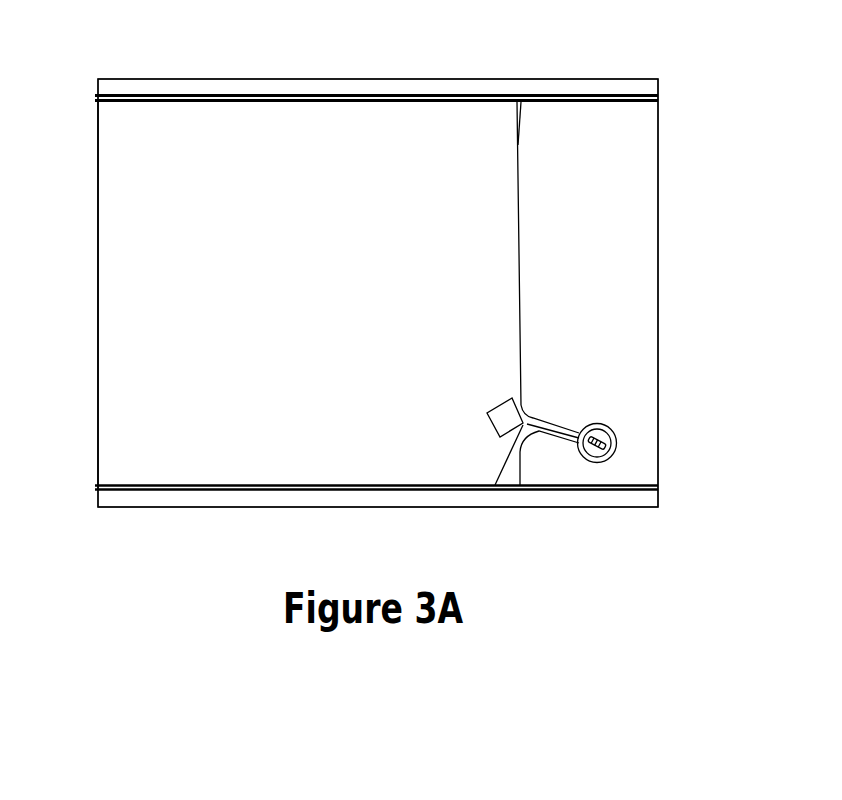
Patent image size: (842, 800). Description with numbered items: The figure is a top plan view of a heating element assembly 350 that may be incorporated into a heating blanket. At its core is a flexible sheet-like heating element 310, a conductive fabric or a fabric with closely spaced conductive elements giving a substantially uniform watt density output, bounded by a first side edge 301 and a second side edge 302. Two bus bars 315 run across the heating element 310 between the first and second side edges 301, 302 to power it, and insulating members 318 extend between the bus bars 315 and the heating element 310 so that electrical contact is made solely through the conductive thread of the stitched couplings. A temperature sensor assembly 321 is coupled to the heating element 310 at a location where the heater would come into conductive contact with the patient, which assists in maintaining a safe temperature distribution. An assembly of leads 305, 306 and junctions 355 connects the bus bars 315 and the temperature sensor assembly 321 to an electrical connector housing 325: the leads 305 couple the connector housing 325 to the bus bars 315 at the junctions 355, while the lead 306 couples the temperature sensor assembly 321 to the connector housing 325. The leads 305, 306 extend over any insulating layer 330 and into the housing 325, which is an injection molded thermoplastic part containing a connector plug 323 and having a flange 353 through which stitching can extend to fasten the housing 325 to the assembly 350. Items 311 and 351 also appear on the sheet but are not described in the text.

In FIG. 3A, the first side edge 301 is at (98, 426).
In FIG. 3A, the second side edge 302 is at (658, 138).
In FIG. 3A, the leads 305 is at (519, 147).
In FIG. 3A, the lead 306 is at (496, 478).
In FIG. 3A, the heating element 310 is at (355, 298).
In FIG. 3A, the bus bars 315 is at (167, 93).
In FIG. 3A, the insulating members 318 is at (210, 88).
In FIG. 3A, the temperature sensor assembly 321 is at (504, 416).
In FIG. 3A, the connector plug 323 is at (610, 458).
In FIG. 3A, the electrical connector housing 325 is at (636, 440).
In FIG. 3A, the heating element assembly 350 is at (609, 62).
In FIG. 3A, the flange 353 is at (606, 424).
In FIG. 3A, the junctions 355 is at (517, 94).
In FIG. 3B, the layer 311 is at (332, 798).
In FIG. 3B, the insulating layer 330 is at (386, 799).
In FIG. 3B, the connector 351 is at (350, 799).